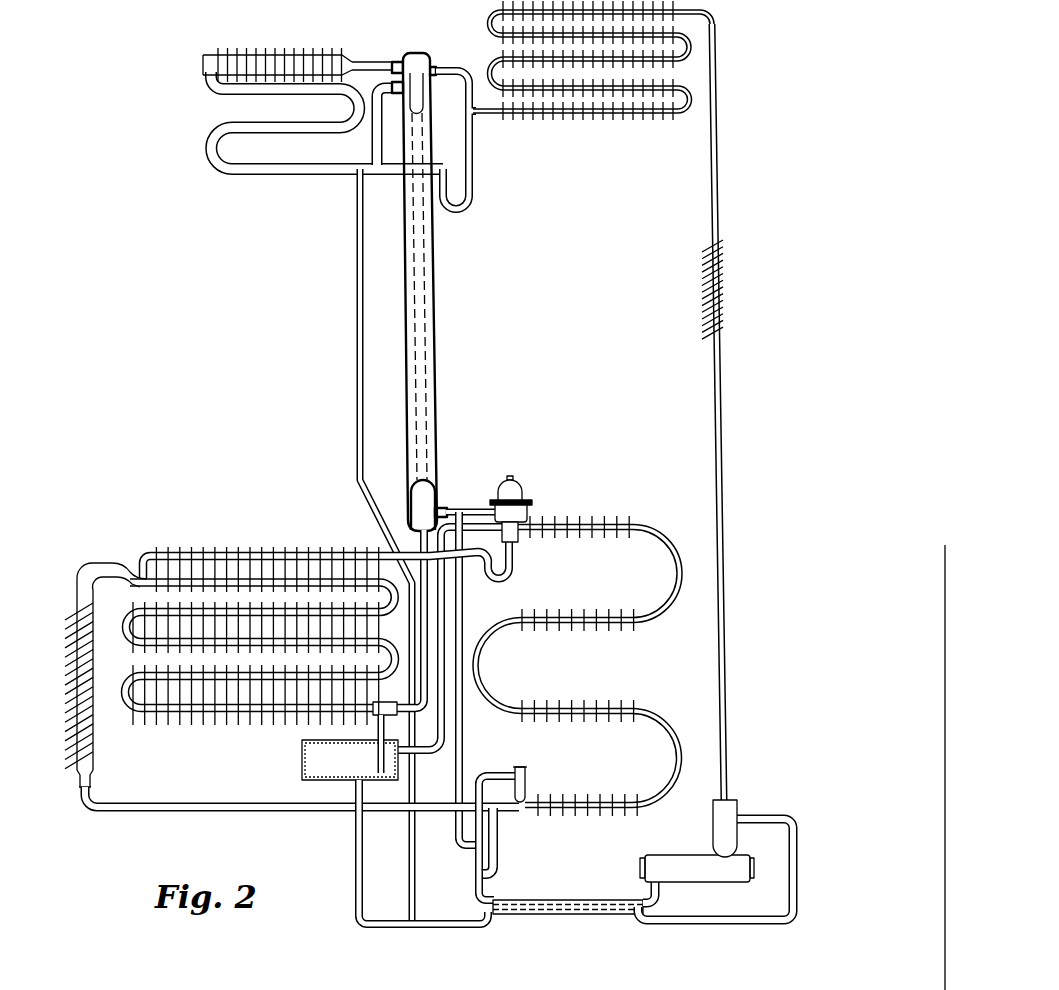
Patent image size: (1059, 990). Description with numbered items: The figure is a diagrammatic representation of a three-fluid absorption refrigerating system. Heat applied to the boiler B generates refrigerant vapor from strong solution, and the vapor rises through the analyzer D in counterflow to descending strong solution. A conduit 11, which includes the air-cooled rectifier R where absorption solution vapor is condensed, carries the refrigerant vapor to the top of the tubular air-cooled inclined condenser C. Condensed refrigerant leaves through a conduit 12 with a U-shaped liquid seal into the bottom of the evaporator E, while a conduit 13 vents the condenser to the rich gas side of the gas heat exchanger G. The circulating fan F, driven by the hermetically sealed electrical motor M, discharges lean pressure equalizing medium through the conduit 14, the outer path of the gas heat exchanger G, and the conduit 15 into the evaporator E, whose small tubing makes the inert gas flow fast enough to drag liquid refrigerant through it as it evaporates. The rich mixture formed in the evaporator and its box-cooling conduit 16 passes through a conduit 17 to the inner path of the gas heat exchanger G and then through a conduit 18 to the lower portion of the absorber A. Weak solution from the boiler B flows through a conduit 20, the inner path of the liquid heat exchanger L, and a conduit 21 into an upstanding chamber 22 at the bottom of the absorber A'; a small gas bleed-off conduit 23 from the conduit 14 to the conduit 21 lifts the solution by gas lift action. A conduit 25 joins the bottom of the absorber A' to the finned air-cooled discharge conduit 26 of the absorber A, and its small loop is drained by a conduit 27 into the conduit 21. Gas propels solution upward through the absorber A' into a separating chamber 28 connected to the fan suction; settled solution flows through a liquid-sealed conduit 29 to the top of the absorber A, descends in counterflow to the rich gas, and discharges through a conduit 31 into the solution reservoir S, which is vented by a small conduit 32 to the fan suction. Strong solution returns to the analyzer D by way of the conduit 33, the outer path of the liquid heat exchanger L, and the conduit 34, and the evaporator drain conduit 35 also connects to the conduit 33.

The conduit 11 is at (719, 403).
The conduit 12 is at (475, 150).
The conduit 13 is at (463, 68).
The conduit 14 is at (455, 508).
The conduit 15 is at (372, 146).
The box-cooling conduit 16 is at (304, 55).
The conduit 17 is at (371, 64).
The conduit 18 is at (428, 625).
The conduit 20 is at (658, 897).
The conduit 21 is at (484, 885).
The upstanding chamber 22 is at (526, 775).
The gas bleed-off conduit 23 is at (463, 742).
The conduit 25 is at (237, 805).
The finned air-cooled discharge conduit 26 is at (76, 596).
The conduit 27 is at (500, 847).
The separating chamber 28 is at (520, 540).
The conduit 29 is at (513, 575).
The conduit 31 is at (378, 728).
The conduit 32 is at (443, 741).
The conduit 33 is at (360, 860).
The conduit 34 is at (790, 893).
The drain conduit 35 is at (356, 383).
The absorber A is at (306, 656).
The absorber A' is at (578, 666).
The boiler B is at (681, 868).
The condenser C is at (609, 115).
The analyzer D is at (730, 810).
The evaporator E is at (238, 173).
The circulating fan F is at (522, 512).
The gas heat exchanger G is at (436, 328).
The liquid heat exchanger L is at (592, 898).
The electrical motor M is at (500, 481).
The air-cooled rectifier R is at (710, 304).
The solution reservoir S is at (302, 757).